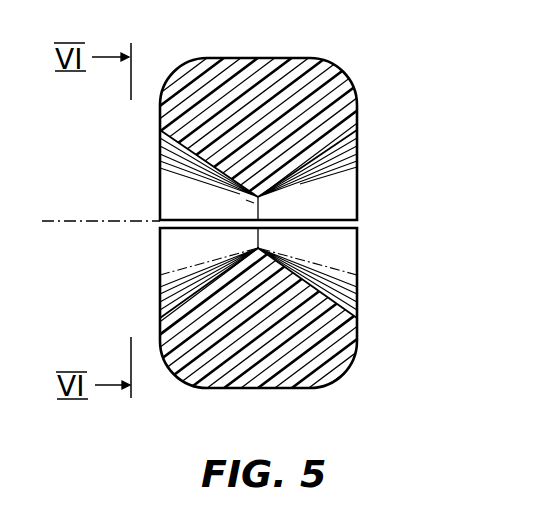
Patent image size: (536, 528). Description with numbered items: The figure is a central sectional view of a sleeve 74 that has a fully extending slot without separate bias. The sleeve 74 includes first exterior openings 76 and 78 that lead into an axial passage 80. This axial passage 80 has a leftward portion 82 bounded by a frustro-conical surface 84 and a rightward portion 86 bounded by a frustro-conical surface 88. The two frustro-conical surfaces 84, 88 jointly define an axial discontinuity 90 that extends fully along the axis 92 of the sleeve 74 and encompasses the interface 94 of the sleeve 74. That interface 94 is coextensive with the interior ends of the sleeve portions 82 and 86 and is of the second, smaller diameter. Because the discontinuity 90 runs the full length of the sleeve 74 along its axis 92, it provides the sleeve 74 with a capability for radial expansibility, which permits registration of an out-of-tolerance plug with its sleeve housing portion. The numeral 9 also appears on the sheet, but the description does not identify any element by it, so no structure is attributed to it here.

The sleeve 74 is at (311, 72).
The first exterior opening 76 is at (160, 190).
The first exterior opening 78 is at (358, 170).
The axial passage 80 is at (152, 268).
The leftward portion 82 is at (209, 258).
The frustro-conical surface 84 is at (163, 153).
The rightward portion 86 is at (333, 258).
The frustro-conical surface 88 is at (355, 291).
The axial discontinuity 90 is at (338, 225).
The sleeve axis 92 is at (75, 219).
The interface 94 is at (262, 204).
The numeral 9 is at (525, 224).